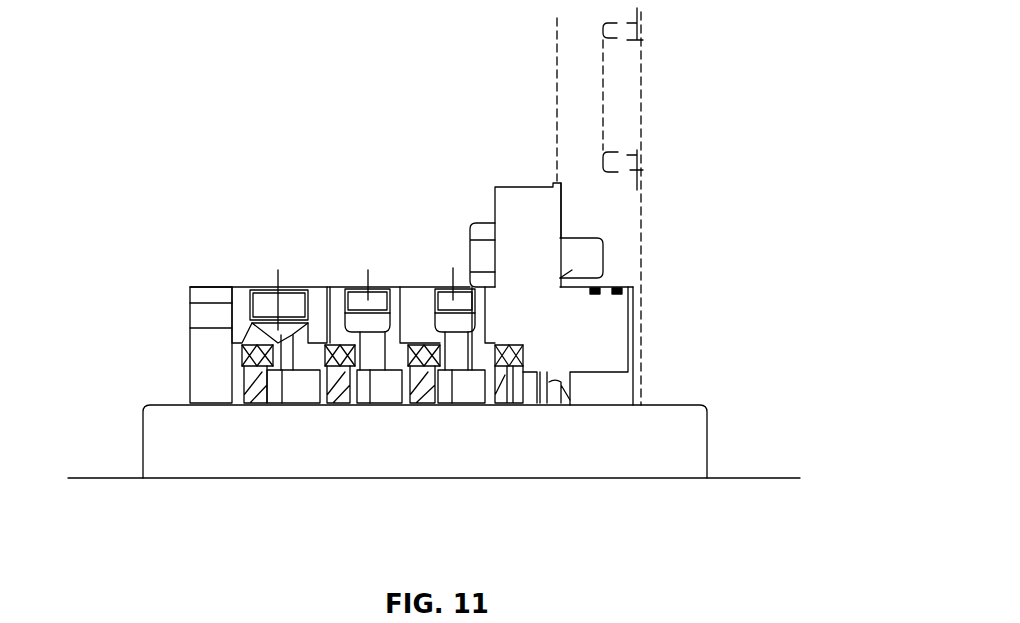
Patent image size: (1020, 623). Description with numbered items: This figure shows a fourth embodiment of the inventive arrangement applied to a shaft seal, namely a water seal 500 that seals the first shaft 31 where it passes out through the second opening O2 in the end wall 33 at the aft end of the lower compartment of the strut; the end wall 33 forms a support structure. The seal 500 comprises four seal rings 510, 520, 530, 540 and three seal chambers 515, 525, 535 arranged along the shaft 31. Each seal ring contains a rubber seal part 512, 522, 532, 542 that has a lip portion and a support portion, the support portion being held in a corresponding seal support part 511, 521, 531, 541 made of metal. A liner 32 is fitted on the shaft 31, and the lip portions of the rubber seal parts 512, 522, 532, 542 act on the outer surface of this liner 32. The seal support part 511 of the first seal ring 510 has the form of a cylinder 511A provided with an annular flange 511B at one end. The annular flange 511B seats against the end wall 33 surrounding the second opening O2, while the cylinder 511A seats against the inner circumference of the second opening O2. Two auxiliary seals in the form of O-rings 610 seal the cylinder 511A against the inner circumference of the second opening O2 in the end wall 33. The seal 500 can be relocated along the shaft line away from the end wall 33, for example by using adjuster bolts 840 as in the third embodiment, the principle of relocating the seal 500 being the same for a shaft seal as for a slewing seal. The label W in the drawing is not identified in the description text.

The water seal 500 is at (136, 99).
The fourth seal ring 540 is at (248, 157).
The third seal ring 530 is at (340, 157).
The second seal ring 520 is at (421, 157).
The first seal ring 510 is at (518, 157).
The seal support part 541 is at (237, 287).
The rubber seal part 542 is at (245, 287).
The seal support part 531 is at (327, 287).
The rubber seal part 532 is at (337, 287).
The seal support part 521 is at (412, 287).
The rubber seal part 522 is at (425, 287).
The seal support part 511 is at (545, 251).
The cylinder 511A is at (620, 335).
The annular flange 511B is at (550, 208).
The rubber seal part 512 is at (512, 345).
The seal chamber 515 is at (474, 416).
The seal chamber 525 is at (393, 416).
The seal chamber 535 is at (308, 416).
The O-rings 610 is at (606, 312).
The adjuster bolts 840 is at (593, 255).
The end wall 33 is at (564, 43).
The liner 32 is at (188, 454).
The first shaft 31 is at (718, 532).
The second opening O2 is at (656, 308).
The wafer W is at (678, 381).